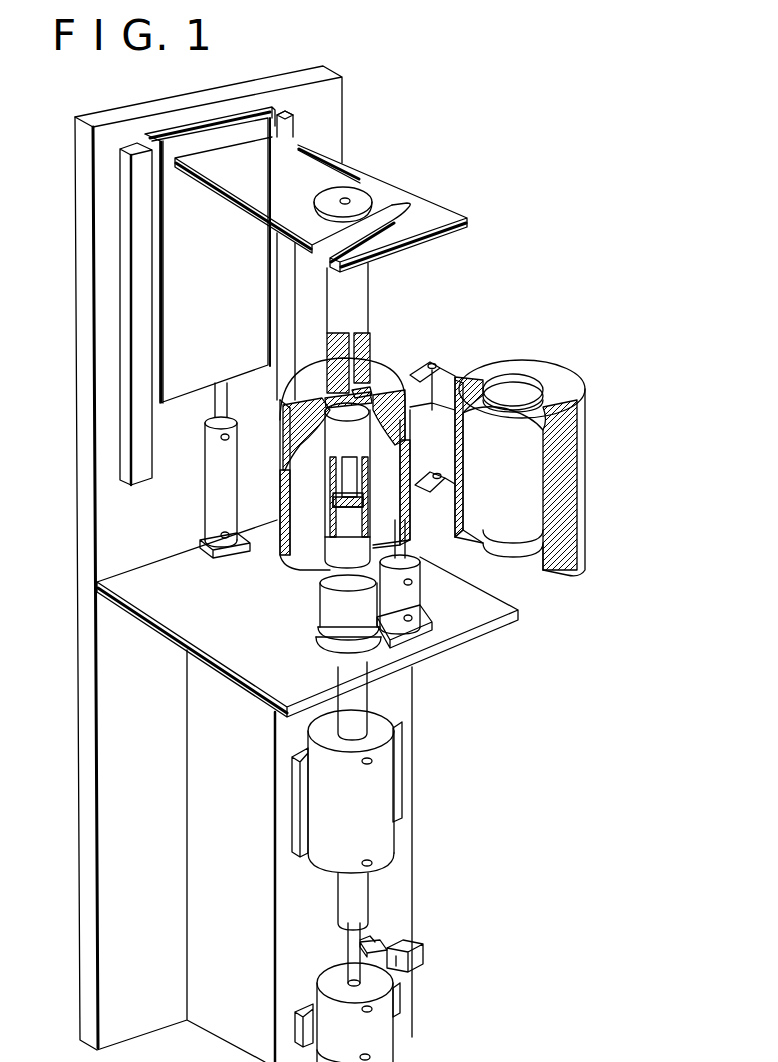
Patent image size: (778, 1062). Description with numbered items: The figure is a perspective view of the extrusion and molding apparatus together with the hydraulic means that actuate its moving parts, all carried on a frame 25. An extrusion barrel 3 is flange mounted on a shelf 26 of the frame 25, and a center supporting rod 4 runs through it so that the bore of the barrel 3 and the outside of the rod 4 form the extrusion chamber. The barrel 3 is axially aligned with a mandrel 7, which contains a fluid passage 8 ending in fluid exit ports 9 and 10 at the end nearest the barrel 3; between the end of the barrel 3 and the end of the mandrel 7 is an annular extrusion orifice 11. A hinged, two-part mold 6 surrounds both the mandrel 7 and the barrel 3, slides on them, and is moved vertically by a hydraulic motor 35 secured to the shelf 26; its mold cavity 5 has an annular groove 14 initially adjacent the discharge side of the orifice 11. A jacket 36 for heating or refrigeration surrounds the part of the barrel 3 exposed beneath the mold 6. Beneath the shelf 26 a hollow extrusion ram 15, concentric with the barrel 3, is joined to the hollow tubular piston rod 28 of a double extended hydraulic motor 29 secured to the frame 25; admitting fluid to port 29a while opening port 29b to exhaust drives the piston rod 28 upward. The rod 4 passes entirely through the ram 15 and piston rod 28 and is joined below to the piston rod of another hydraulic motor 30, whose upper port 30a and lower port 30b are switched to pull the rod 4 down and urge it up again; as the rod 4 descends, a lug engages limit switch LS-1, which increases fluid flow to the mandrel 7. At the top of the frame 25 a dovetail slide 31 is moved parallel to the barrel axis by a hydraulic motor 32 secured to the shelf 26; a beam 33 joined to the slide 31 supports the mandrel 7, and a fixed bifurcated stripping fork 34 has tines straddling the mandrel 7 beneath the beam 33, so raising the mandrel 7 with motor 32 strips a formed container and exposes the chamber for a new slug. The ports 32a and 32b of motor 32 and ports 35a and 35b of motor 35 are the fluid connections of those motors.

The extrusion barrel 3 is at (372, 443).
The center supporting rod 4 is at (292, 476).
The mold cavity 5 is at (525, 478).
The mold 6 is at (493, 362).
The mandrel 7 is at (373, 285).
The fluid passage 8 is at (348, 200).
The fluid exit port 9 is at (332, 393).
The fluid exit port 10 is at (370, 387).
The annular extrusion orifice 11 is at (385, 395).
The annular groove 14 is at (290, 425).
The hollow extrusion ram 15 is at (290, 530).
The frame 25 is at (143, 748).
The shelf 26 is at (240, 620).
The hollow tubular piston rod 28 is at (368, 722).
The hydraulic motor 29 is at (386, 826).
The port 29a is at (371, 863).
The port 29b is at (371, 761).
The hydraulic motor 30 is at (394, 1027).
The upper port 30a is at (371, 1008).
The lower port 30b is at (370, 1057).
The dovetail slide 31 is at (218, 302).
The hydraulic motor 32 is at (203, 468).
The port of hydraulic motor 32 32a is at (221, 437).
The port of hydraulic motor 32 32b is at (221, 535).
The beam 33 is at (263, 183).
The bifurcated stripping fork 34 is at (408, 177).
The hydraulic motor 35 is at (416, 597).
The port of hydraulic motor 35 35a is at (412, 619).
The port of hydraulic motor 35 35b is at (411, 582).
The jacket 36 is at (322, 605).
The limit switch LS-1 is at (424, 953).